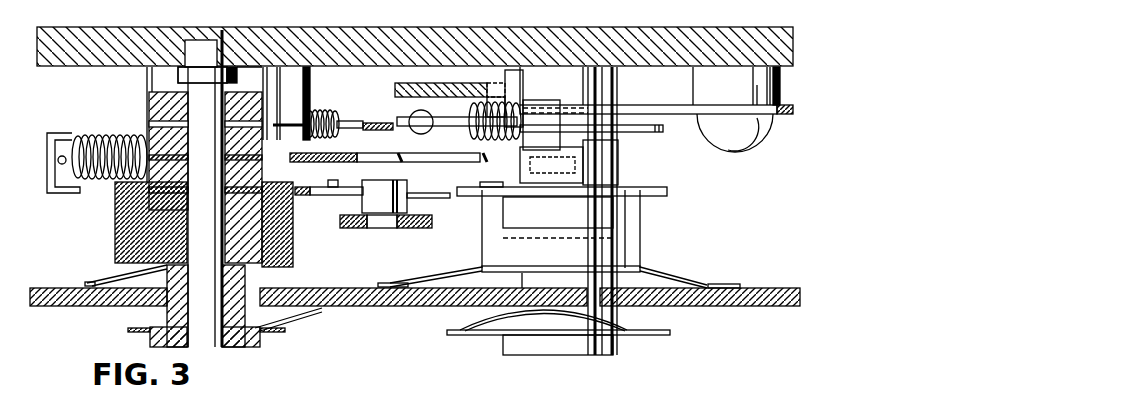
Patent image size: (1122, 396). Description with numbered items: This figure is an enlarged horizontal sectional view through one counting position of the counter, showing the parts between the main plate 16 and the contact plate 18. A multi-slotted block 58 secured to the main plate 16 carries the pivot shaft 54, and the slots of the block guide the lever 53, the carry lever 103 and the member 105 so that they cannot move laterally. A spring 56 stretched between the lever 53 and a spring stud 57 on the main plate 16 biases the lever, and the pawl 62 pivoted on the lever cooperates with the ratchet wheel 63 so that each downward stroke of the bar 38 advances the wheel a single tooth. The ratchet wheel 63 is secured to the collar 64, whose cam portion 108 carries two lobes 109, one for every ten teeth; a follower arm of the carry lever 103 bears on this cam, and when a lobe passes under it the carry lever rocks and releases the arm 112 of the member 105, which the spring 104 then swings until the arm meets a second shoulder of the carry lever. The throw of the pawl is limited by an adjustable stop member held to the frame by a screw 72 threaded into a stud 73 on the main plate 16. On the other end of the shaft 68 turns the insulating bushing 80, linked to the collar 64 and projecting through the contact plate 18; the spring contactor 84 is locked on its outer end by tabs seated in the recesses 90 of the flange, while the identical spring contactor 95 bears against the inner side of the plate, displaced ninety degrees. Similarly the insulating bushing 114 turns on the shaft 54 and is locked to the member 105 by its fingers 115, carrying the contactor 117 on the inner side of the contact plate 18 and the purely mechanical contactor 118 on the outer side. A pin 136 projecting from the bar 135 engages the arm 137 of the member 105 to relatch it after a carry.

The main plate 16 is at (340, 36).
The contact plate 18 is at (752, 307).
The bar 38 is at (395, 90).
The lever 53 is at (379, 123).
The pivot shaft 54 is at (207, 345).
The spring 56 is at (326, 116).
The spring stud 57 is at (310, 96).
The multi-slotted block 58 is at (247, 66).
The pawl 62 is at (436, 118).
The ratchet wheel 63 is at (626, 118).
The collar 64 is at (620, 163).
The shaft 68 is at (663, 128).
The screw 72 is at (716, 133).
The stud 73 is at (778, 96).
The bushing 80 is at (640, 263).
The spring contactor 84 is at (654, 337).
The recesses 90 is at (552, 335).
The spring contactor 95 is at (674, 276).
The carry lever 103 is at (428, 161).
The spring 104 is at (112, 135).
The member 105 is at (306, 196).
The cam portion 108 is at (620, 168).
The lobes 109 is at (535, 168).
The arm 112 is at (360, 152).
The bushing 114 is at (286, 248).
The fingers 115 is at (279, 182).
The contactor 117 is at (105, 270).
The contactor 118 is at (285, 333).
The bar 135 is at (410, 228).
The pin 136 is at (408, 194).
The arm 137 is at (438, 198).